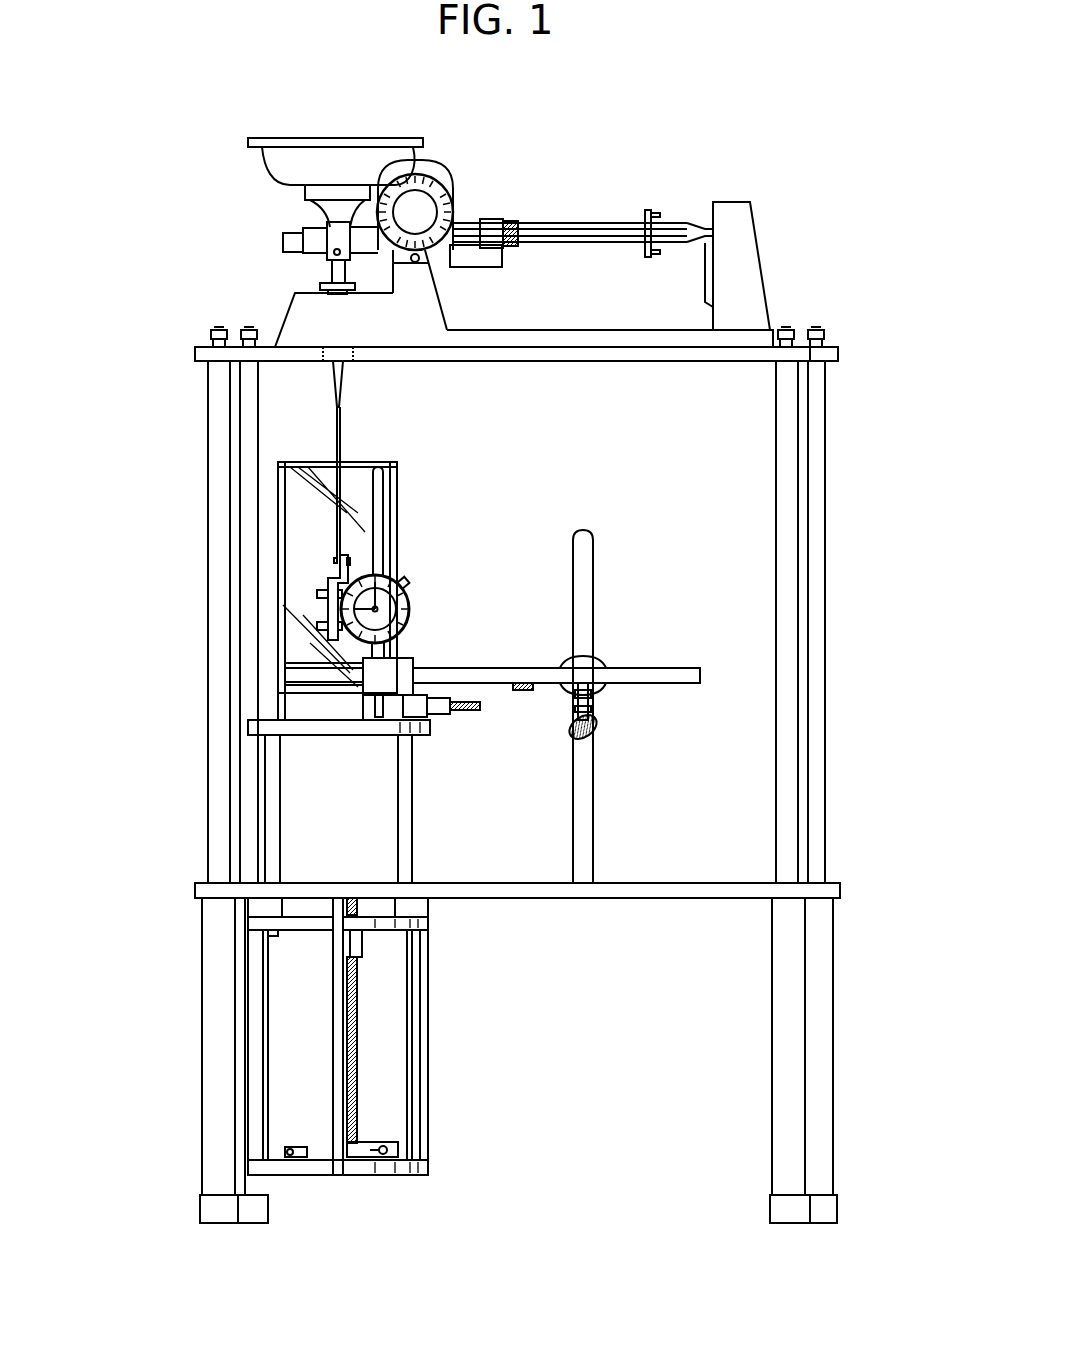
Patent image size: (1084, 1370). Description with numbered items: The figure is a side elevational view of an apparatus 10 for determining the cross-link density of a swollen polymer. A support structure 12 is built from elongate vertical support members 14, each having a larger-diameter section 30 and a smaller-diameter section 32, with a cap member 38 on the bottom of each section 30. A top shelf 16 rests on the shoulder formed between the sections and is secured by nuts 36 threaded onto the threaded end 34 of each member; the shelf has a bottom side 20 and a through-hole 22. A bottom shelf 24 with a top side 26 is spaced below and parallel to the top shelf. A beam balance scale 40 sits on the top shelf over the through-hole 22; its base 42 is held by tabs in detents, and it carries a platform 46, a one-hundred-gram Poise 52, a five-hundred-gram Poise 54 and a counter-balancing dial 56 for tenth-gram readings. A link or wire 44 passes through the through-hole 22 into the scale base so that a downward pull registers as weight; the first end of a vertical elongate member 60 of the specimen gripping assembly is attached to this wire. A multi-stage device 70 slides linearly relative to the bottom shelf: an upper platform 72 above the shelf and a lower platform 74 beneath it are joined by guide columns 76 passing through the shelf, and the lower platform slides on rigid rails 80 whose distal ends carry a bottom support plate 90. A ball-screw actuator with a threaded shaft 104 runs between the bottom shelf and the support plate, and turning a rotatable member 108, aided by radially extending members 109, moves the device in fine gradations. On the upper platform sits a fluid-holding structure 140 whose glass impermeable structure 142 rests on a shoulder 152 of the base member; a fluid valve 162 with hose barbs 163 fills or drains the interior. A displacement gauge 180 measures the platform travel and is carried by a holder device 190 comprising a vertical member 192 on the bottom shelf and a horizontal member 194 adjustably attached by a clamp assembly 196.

The apparatus 10 is at (80, 235).
The support structure 12 is at (893, 640).
The support members 14 is at (818, 440).
The top shelf 16 is at (565, 355).
The bottom side 20 is at (725, 360).
The through-hole 22 is at (355, 357).
The bottom shelf 24 is at (650, 897).
The top side 26 is at (535, 880).
The section 30 is at (790, 1005).
The section 32 is at (245, 425).
The threaded end 34 is at (220, 328).
The nuts 36 is at (210, 342).
The cap member 38 is at (215, 1215).
The scale 40 is at (578, 135).
The base 42 is at (435, 295).
The link or wire 44 is at (333, 380).
The platform 46 is at (300, 137).
The Poise 52 is at (495, 222).
The Poise 54 is at (500, 262).
The counter-balancing dial 56 is at (415, 212).
The elongate member 60 is at (345, 445).
The multi-stage device 70 is at (420, 775).
The upper platform 72 is at (338, 737).
The lower platform 74 is at (380, 925).
The guide columns 76 is at (396, 850).
The rails 80 is at (250, 910).
The bottom support plate 90 is at (315, 1176).
The threaded shaft 104 is at (355, 905).
The rotatable member 108 is at (395, 1120).
The members 109 is at (390, 1157).
The fluid-holding structure 140 is at (275, 585).
The fluid impermeable structure 142 is at (280, 500).
The shoulder 152 is at (300, 695).
The fluid valve 162 is at (425, 695).
The hose barbs 163 is at (490, 717).
The displacement gauge 180 is at (410, 630).
The displacement gauge holder device 190 is at (635, 625).
The vertical member 192 is at (595, 795).
The horizontal member 194 is at (680, 668).
The clamp assembly 196 is at (597, 690).